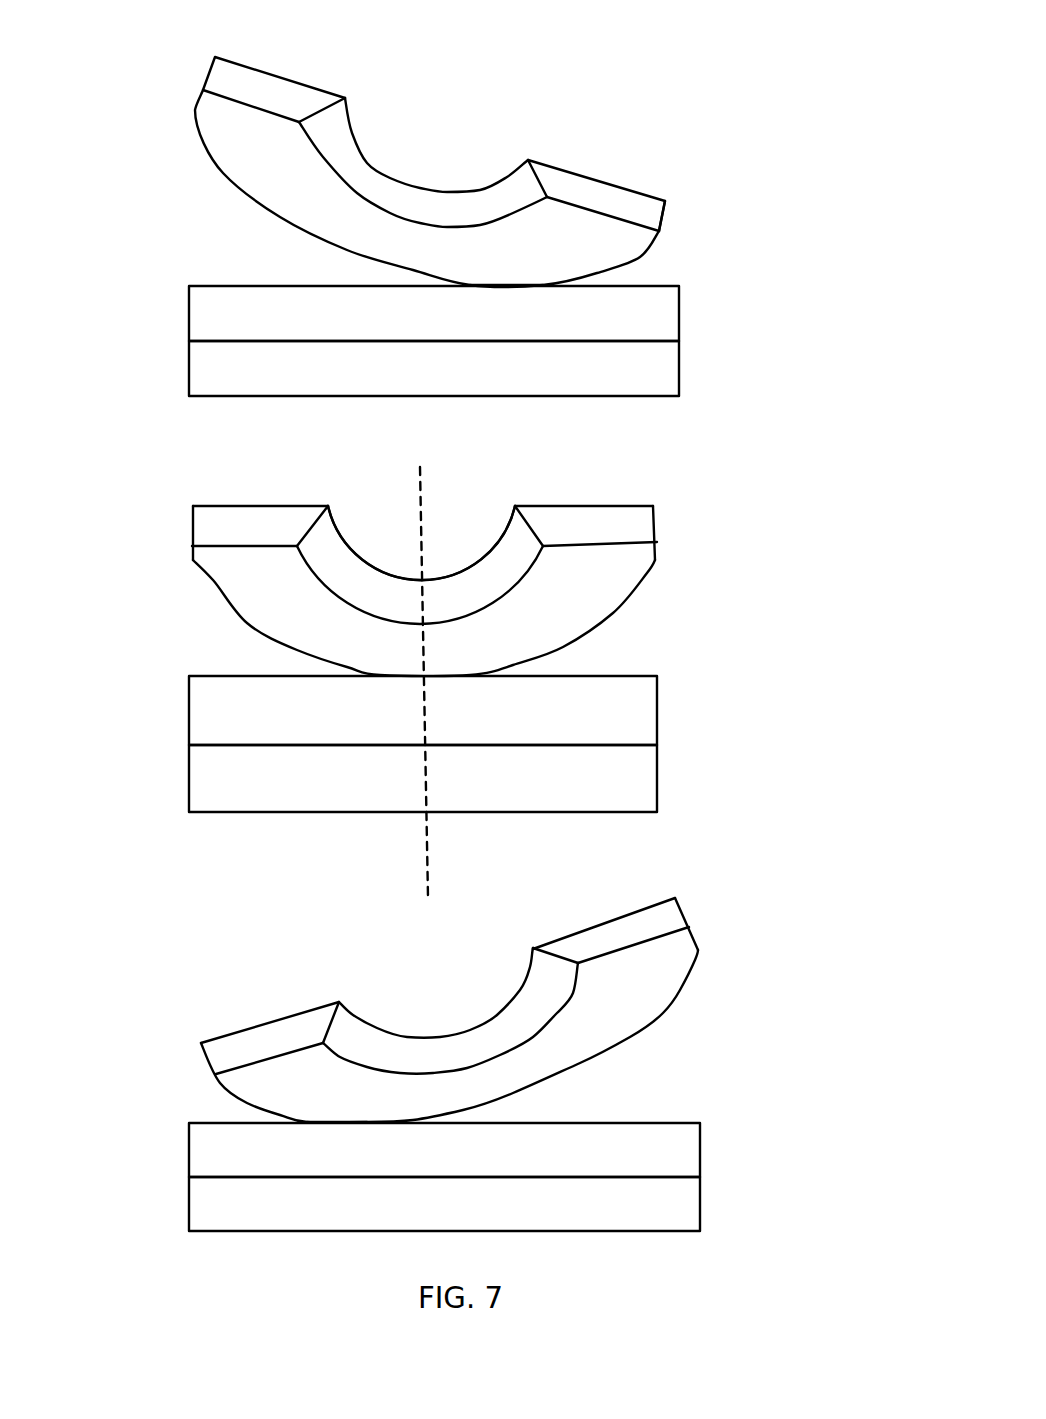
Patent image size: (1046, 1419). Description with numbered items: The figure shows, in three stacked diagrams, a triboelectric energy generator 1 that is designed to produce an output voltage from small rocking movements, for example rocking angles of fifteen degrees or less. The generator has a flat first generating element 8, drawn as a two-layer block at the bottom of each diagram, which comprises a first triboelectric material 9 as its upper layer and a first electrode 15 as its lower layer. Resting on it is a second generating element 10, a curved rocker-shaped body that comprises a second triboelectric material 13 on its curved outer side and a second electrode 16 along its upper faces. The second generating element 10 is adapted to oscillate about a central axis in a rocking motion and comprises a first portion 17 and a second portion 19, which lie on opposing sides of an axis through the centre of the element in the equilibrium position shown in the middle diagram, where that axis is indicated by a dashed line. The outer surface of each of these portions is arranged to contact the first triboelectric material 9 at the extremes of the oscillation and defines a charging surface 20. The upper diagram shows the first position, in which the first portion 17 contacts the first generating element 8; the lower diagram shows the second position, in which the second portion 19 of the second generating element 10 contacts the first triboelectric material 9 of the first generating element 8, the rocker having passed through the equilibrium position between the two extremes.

The triboelectric energy generator 1 is at (143, 105).
The first generating element 8 is at (154, 347).
The first triboelectric material 9 is at (680, 307).
The second generating element 10 is at (198, 194).
The second triboelectric material 13 is at (637, 257).
The first electrode 15 is at (680, 373).
The second electrode 16 is at (633, 200).
The first portion 17 is at (359, 511).
The second portion 19 is at (482, 532).
The charging surface 20 is at (518, 286).